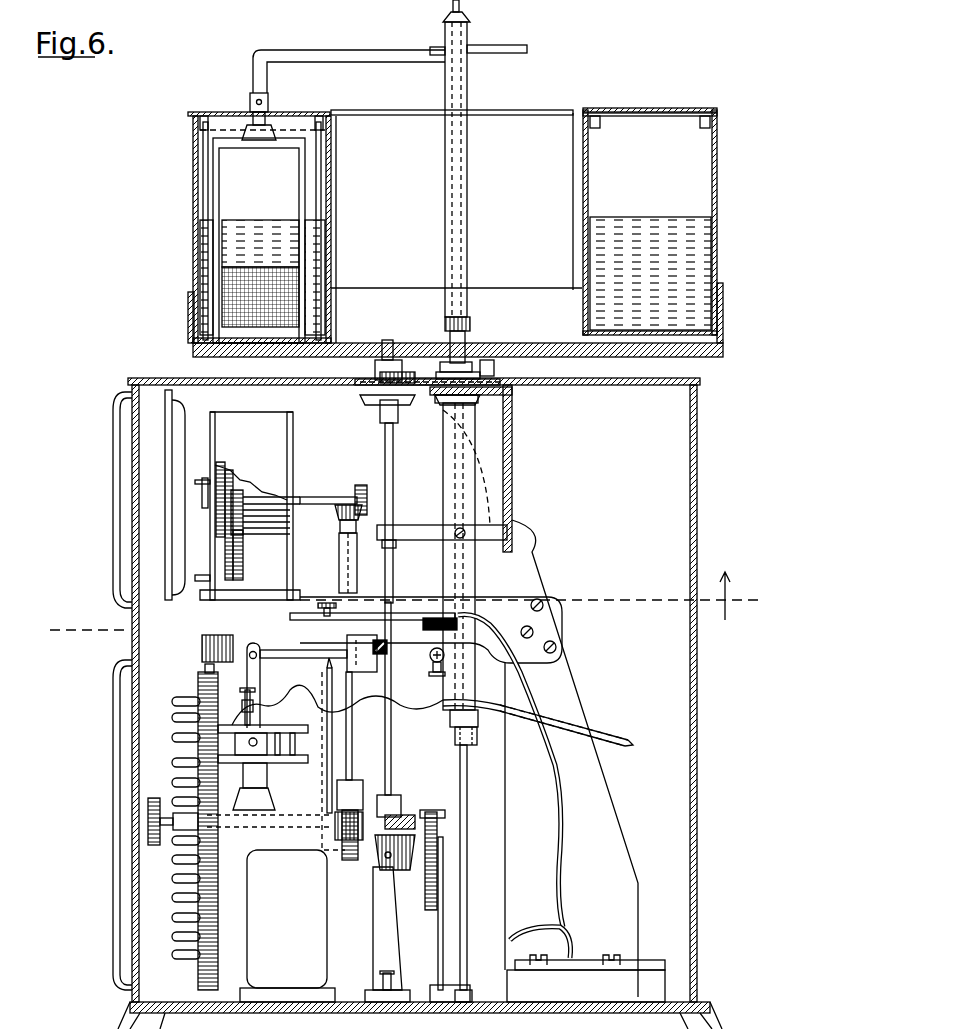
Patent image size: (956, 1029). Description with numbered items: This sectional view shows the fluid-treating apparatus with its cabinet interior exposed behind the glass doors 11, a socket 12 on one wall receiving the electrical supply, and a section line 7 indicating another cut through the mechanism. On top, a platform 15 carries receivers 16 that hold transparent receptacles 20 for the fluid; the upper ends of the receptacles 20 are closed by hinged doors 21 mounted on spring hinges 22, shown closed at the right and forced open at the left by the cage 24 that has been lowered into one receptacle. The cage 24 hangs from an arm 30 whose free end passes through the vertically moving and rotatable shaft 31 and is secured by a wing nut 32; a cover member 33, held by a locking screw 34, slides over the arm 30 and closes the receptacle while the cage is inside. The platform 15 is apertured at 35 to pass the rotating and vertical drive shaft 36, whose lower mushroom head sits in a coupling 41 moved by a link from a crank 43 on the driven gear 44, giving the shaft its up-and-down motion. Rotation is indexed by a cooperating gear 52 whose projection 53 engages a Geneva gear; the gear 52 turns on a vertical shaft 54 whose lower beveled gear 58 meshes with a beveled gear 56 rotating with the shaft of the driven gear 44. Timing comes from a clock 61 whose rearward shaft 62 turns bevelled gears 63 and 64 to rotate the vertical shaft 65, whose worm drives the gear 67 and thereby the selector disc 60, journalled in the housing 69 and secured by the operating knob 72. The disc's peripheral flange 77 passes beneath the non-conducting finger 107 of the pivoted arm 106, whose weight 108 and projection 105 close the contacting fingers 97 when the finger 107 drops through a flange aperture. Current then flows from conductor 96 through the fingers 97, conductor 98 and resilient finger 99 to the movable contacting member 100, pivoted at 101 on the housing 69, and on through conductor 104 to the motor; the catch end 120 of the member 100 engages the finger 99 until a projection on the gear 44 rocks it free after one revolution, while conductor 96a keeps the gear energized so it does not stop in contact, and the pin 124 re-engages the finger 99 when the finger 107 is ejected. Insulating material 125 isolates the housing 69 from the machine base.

The section line 7- 7 is at (395, 606).
The glass doors 11 is at (124, 536).
The socket 12 is at (467, 860).
The platform 15 is at (640, 350).
The receivers 16 is at (190, 312).
The receptacles 20 is at (198, 214).
The hinged doors 21 is at (203, 155).
The spring hinges 22 is at (203, 116).
The cage 24 is at (322, 206).
The arm 30 is at (362, 50).
The shaft 31 is at (467, 80).
The wing nut 32 is at (468, 16).
The cover member 33 is at (300, 112).
The locking screw 34 is at (250, 102).
The aperture 35 is at (471, 335).
The drive shaft 36 is at (455, 470).
The coupling 41 is at (471, 746).
The crank 43 is at (440, 932).
The driven gear 44 is at (433, 812).
The cooperating gear 52 is at (375, 372).
The projection 53 is at (356, 385).
The vertical shaft 54 is at (393, 460).
The beveled gear 56 is at (398, 870).
The beveled gear 58 is at (415, 819).
The selector disc 60 is at (495, 370).
The clock 61 is at (282, 446).
The shaft 62 is at (318, 497).
The bevelled gear 63 is at (362, 485).
The bevelled gear 64 is at (336, 512).
The vertical shaft 65 is at (352, 745).
The gear 67 is at (335, 826).
The housing 69 is at (285, 842).
The operating knob 72 is at (156, 797).
The peripheral flange 77 is at (212, 775).
The conductor 96 is at (525, 682).
The conductor 96a is at (535, 938).
The contacting fingers 97 is at (365, 632).
The conductor 98 is at (428, 660).
The resilient finger 99 is at (366, 673).
The movable contacting member 100 is at (330, 718).
The pivot 101 is at (350, 860).
The conductor 104 is at (428, 712).
The non-conducting projection 105 is at (335, 650).
The pivoted arm 106 is at (292, 656).
The non-conducting finger 107 is at (205, 669).
The weight 108 is at (202, 647).
The catch end 120 is at (327, 670).
The pin 124 is at (345, 660).
The insulating material 125 is at (295, 990).